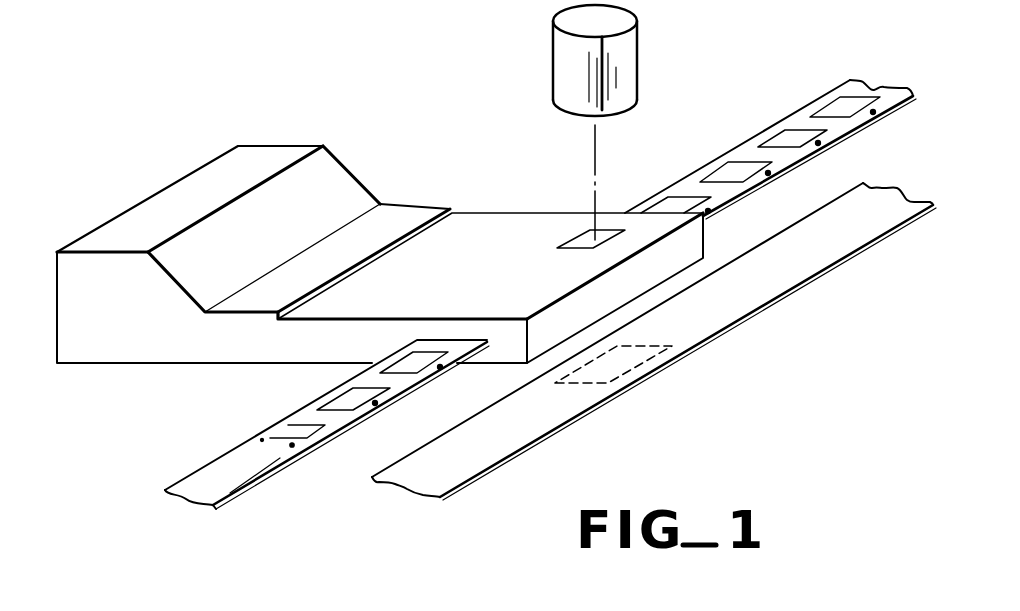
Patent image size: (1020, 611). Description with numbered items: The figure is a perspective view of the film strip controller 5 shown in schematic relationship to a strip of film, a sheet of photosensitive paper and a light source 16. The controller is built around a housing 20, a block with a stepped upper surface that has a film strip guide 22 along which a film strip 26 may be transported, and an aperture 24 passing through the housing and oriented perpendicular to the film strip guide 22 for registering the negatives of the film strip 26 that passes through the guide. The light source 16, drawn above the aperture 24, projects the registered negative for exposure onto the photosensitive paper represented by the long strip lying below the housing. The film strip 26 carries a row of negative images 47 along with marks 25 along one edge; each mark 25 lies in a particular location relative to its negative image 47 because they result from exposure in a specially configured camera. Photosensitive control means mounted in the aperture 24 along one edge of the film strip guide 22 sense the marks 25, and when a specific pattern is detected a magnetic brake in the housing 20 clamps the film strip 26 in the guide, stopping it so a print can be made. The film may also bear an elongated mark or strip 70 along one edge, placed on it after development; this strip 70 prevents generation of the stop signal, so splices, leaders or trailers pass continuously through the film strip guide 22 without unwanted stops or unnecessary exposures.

The film strip controller 5 is at (380, 240).
The light source 16 is at (646, 44).
The housing 20 is at (128, 365).
The film strip guide 22 is at (327, 464).
The aperture 24 is at (602, 237).
The marks 25 is at (770, 173).
The film strip 26 is at (770, 139).
The negative image 47 is at (727, 173).
The elongated mark or strip 70 is at (230, 498).